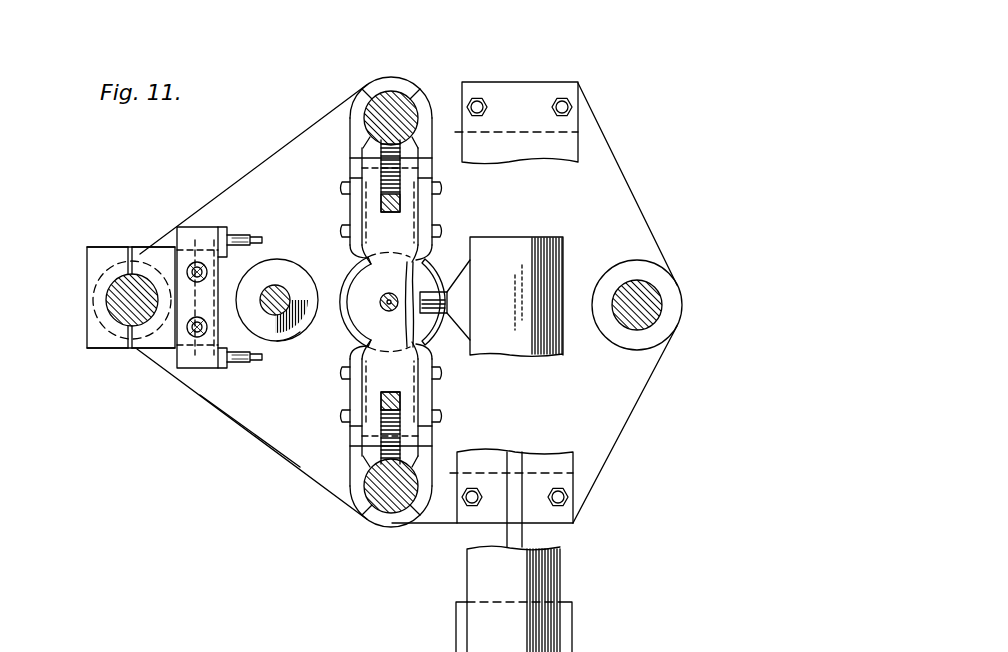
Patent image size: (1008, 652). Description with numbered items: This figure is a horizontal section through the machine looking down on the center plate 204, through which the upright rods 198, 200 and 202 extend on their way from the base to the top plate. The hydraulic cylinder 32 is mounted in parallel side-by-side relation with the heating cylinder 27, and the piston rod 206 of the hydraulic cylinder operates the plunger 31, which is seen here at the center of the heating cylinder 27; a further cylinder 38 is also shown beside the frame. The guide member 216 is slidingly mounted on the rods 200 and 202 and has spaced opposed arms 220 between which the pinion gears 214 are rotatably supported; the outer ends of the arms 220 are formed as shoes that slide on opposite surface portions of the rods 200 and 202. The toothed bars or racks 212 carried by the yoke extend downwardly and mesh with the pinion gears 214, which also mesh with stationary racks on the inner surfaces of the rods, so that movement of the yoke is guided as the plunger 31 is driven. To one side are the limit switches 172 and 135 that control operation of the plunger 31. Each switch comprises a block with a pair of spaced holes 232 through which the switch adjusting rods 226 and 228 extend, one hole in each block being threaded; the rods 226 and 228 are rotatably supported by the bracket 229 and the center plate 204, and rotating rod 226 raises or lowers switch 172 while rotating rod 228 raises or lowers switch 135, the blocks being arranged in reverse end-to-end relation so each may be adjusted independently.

The rod 202 is at (390, 91).
The rod 200 is at (360, 503).
The arms of the guide member 220 is at (420, 92).
The pinion gears 214 is at (380, 160).
The toothed bars or racks 212 is at (380, 203).
The guide member 216 is at (512, 205).
The hydraulic cylinder 38 is at (563, 254).
The heating cylinder 27 is at (347, 337).
The plunger 31 is at (381, 297).
The limit switch 172 is at (207, 226).
The rod 226 is at (192, 265).
The rod 228 is at (177, 343).
The bracket 229 is at (87, 268).
The rod 198 is at (114, 306).
The limit switch 135 is at (204, 370).
The spaced holes 232 is at (208, 306).
The piston rod 206 is at (267, 287).
The hydraulic cylinder 32 is at (281, 342).
The plate 204 is at (262, 440).